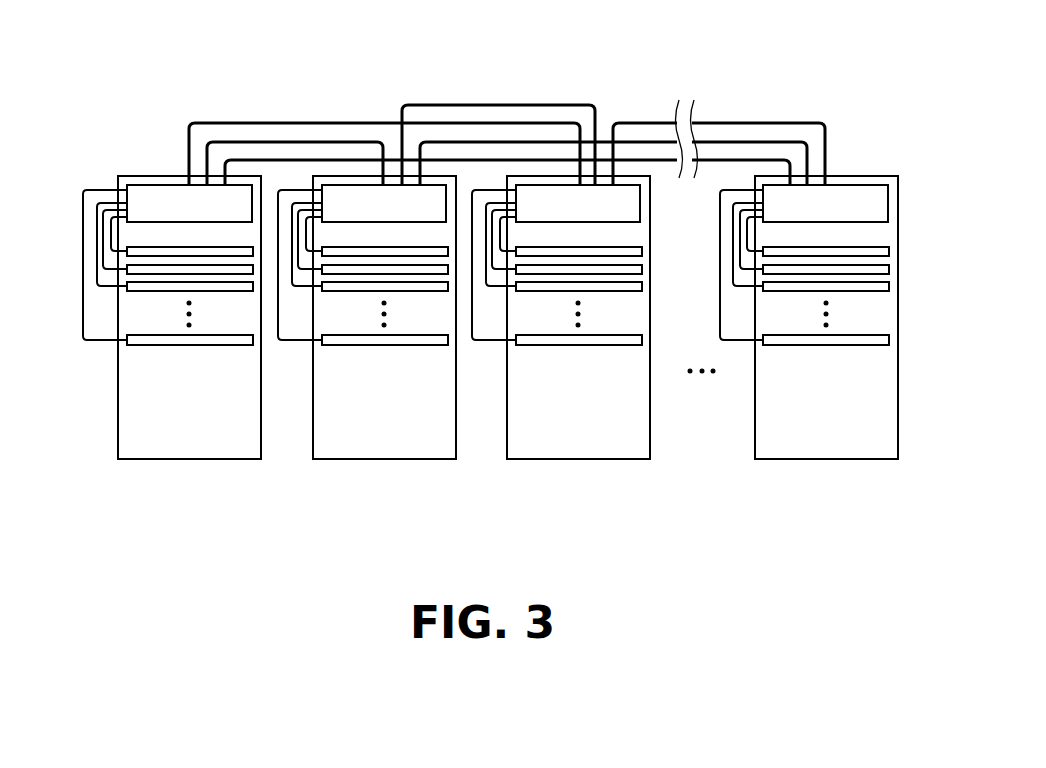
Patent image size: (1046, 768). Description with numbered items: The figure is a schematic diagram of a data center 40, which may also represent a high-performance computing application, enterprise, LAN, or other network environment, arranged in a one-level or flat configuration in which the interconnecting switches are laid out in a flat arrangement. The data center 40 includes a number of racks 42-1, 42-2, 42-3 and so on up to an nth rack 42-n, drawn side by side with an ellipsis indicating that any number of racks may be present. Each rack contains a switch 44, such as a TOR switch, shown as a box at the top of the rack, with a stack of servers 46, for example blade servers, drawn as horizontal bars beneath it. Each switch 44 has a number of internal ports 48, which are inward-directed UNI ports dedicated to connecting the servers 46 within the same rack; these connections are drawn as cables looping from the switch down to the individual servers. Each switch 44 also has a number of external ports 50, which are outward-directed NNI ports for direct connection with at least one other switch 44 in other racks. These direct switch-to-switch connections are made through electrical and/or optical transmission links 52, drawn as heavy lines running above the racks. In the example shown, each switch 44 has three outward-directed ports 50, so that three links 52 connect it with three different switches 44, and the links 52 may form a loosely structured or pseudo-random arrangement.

The data center 40 is at (303, 575).
The rack 42-1 is at (190, 460).
The rack 42-2 is at (372, 460).
The rack 42-3 is at (558, 460).
The rack 42-n is at (900, 420).
The switch 44 is at (153, 185).
The servers 46 is at (208, 350).
The internal ports 48 is at (106, 181).
The external ports 50 is at (176, 169).
The transmission links 52 is at (616, 105).